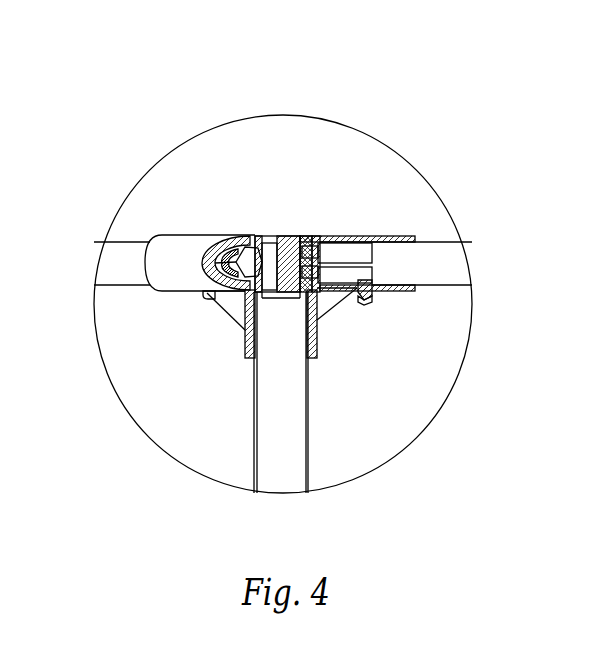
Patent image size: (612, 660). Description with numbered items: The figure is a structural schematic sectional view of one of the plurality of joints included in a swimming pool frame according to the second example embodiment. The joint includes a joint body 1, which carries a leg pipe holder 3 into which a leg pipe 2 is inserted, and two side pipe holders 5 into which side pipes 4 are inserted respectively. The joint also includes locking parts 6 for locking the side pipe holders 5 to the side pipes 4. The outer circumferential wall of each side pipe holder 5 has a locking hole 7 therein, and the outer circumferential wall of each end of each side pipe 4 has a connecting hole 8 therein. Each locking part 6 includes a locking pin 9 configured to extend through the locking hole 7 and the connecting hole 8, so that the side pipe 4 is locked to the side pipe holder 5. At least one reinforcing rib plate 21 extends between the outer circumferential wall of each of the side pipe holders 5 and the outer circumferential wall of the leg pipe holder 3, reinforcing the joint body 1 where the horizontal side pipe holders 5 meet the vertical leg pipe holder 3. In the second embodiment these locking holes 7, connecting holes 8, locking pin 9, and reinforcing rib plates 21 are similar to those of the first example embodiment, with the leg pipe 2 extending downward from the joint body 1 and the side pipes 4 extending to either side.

The joint body 1 is at (271, 172).
The leg pipe 2 is at (206, 393).
The leg pipe holder 3 is at (212, 353).
The side pipe 4 is at (277, 209).
The side pipe holder 5 is at (272, 190).
The locking part 6 is at (332, 173).
The locking hole 7 is at (442, 340).
The connecting hole 8 is at (423, 300).
The locking pin 9 is at (416, 384).
The reinforcing rib plate 21 is at (137, 331).